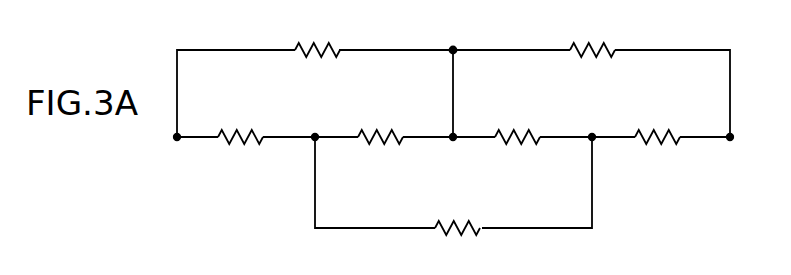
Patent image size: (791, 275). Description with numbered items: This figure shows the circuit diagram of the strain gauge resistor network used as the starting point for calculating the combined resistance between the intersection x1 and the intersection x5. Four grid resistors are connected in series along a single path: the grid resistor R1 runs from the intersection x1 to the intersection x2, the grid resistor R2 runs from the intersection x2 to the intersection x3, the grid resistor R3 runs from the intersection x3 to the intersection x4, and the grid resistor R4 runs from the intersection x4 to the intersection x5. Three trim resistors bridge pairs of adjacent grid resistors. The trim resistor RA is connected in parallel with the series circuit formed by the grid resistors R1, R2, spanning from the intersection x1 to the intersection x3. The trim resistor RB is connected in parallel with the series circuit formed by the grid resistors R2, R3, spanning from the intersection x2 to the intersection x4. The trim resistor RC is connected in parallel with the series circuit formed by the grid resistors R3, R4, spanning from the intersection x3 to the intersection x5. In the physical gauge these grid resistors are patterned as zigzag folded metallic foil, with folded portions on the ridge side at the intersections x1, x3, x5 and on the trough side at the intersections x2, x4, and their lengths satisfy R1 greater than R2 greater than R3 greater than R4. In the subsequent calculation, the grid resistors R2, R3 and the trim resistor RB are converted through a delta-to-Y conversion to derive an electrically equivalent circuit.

The grid resistor R1 is at (240, 121).
The grid resistor R2 is at (380, 121).
The grid resistor R3 is at (517, 121).
The grid resistor R4 is at (657, 121).
The trim resistor RA is at (317, 33).
The trim resistor RB is at (457, 244).
The trim resistor RC is at (592, 33).
The intersection x1 is at (174, 154).
The intersection x2 is at (317, 123).
The intersection x3 is at (455, 153).
The intersection x4 is at (592, 123).
The intersection x5 is at (730, 153).